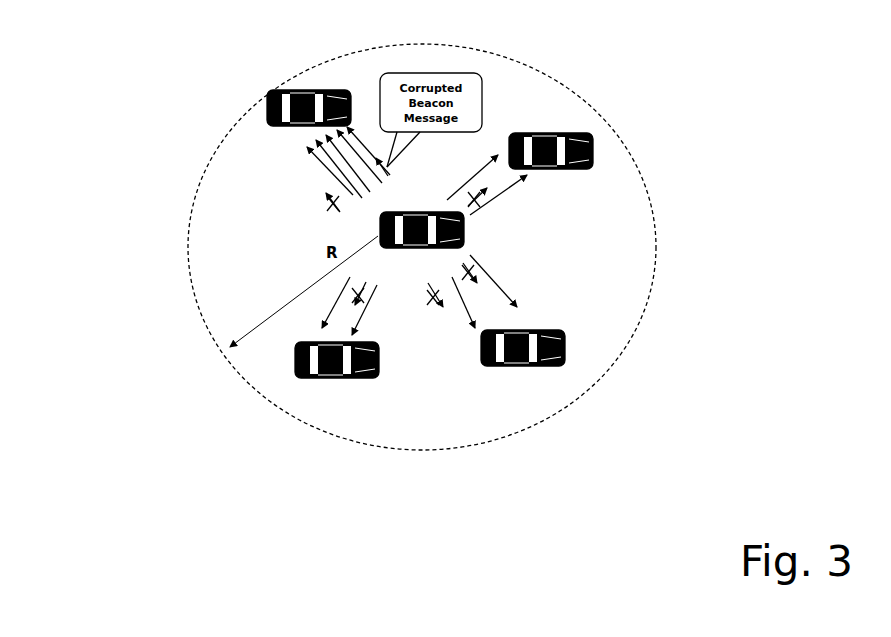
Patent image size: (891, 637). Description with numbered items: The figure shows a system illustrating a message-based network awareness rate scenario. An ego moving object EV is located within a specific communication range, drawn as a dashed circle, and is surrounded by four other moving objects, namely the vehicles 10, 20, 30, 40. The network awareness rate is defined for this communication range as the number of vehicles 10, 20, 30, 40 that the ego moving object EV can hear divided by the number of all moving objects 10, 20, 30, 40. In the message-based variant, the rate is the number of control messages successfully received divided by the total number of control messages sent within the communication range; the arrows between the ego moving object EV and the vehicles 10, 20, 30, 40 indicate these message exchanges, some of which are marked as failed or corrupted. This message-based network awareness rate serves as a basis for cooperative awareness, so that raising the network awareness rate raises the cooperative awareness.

The vehicle 30 is at (262, 112).
The vehicle 20 is at (596, 152).
The ego moving object EV is at (465, 233).
The vehicle 10 is at (568, 348).
The vehicle 40 is at (322, 380).